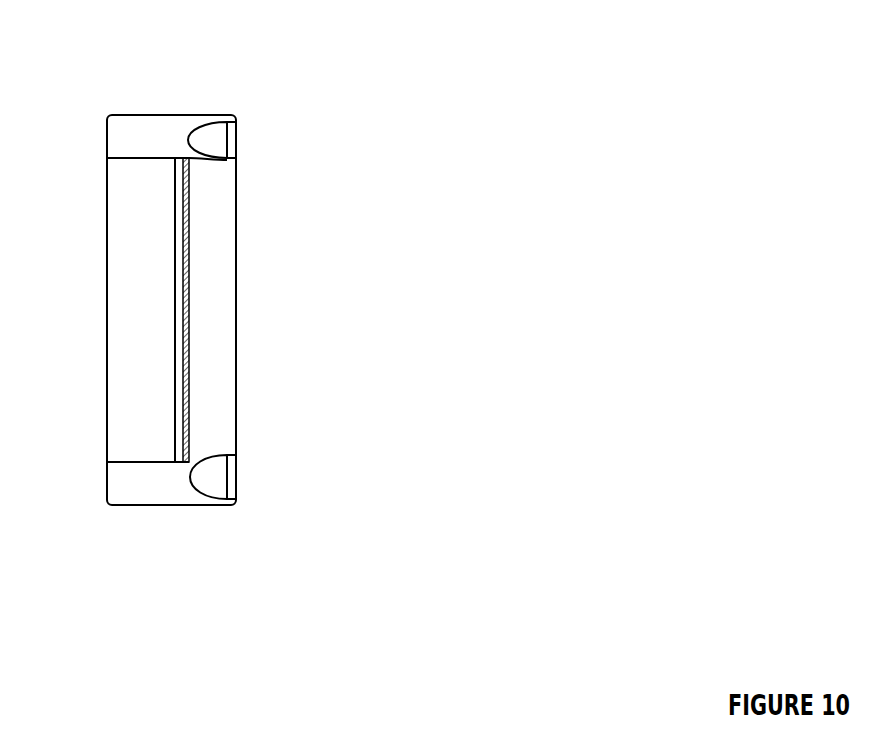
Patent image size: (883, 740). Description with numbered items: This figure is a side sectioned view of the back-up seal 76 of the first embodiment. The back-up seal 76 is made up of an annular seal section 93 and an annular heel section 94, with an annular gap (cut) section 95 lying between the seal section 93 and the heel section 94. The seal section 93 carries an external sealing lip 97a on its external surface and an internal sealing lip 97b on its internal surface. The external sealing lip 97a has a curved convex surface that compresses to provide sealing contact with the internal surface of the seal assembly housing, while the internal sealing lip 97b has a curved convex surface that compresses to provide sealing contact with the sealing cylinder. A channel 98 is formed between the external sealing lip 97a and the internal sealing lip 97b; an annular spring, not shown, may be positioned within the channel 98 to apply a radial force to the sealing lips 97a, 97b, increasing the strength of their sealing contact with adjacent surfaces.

The back-up seal 76 is at (118, 55).
The annular seal section 93 is at (218, 398).
The annular heel section 94 is at (122, 263).
The annular gap section 95 is at (189, 305).
The external sealing lip 97a is at (215, 112).
The internal sealing lip 97b is at (213, 165).
The channel 98 is at (215, 482).